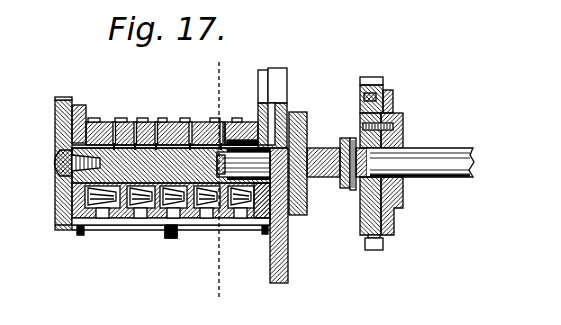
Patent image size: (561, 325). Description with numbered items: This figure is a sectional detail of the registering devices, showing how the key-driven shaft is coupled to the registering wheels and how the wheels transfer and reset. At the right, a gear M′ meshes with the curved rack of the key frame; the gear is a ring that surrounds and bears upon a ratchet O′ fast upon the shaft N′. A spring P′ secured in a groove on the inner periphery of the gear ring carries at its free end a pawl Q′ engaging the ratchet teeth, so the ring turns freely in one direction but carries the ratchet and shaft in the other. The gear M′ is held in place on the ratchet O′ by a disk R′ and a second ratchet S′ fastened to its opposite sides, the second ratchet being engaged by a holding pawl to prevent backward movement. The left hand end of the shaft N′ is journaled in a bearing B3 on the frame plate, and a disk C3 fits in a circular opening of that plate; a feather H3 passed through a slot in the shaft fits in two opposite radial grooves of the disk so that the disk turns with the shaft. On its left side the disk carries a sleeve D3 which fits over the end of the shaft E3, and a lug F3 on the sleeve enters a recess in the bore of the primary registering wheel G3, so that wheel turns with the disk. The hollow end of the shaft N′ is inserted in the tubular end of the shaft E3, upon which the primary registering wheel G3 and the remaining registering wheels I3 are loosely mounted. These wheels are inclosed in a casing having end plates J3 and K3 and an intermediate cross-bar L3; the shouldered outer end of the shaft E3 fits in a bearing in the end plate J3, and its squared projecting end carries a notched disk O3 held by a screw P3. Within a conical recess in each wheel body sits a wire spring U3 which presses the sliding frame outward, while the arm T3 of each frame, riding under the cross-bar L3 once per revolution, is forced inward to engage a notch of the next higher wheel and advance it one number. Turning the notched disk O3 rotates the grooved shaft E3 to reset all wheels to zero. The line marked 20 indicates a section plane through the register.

The notched disk O3 is at (65, 123).
The end plate J3 is at (79, 106).
The registering wheel I3 is at (138, 120).
The primary registering wheel G3 is at (222, 119).
The sleeve D3 is at (235, 134).
The shaft E3 is at (163, 153).
The screw P3 is at (56, 160).
The cross-bar L3 is at (107, 219).
The wire spring U3 is at (138, 206).
The arm T3 is at (200, 207).
The lug F3 is at (248, 208).
The end plate K3 is at (264, 70).
The disk C3 is at (282, 102).
The bearing B3 is at (308, 118).
The feather H3 is at (308, 131).
The disk R′ is at (360, 199).
The gear M′ is at (372, 77).
The spring P′ is at (383, 90).
The pawl Q′ is at (393, 102).
The second ratchet S′ is at (404, 135).
The shaft N′ is at (441, 158).
The ratchet O′ is at (397, 201).
The section line 20 is at (214, 68).